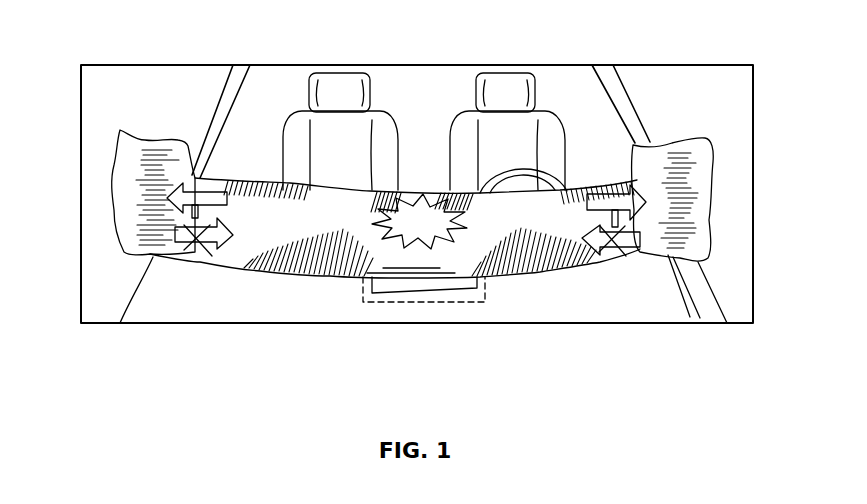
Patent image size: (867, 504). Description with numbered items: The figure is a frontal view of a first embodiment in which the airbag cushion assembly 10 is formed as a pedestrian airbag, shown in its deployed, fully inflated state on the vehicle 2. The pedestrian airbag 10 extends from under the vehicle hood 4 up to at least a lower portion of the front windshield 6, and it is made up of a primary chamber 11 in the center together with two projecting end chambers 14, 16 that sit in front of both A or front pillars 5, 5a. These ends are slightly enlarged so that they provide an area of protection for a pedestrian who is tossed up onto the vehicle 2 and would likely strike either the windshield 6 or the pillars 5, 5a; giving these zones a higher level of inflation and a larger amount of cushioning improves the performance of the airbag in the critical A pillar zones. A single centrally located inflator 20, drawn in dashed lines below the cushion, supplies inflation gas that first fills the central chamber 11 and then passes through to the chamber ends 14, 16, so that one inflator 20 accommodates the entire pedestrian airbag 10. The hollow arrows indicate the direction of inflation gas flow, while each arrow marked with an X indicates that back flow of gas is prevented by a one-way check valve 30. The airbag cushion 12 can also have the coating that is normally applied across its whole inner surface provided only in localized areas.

The vehicle 2 is at (427, 100).
The vehicle hood 4 is at (655, 292).
The A pillar 5 is at (212, 120).
The A pillar 5a is at (625, 108).
The front windshield 6 is at (293, 147).
The airbag cushion assembly 10 is at (518, 208).
The primary chamber 11 is at (290, 258).
The airbag cushion 12 is at (359, 205).
The projecting end chamber 14 is at (128, 177).
The projecting end chamber 16 is at (698, 185).
The inflator 20 is at (385, 300).
The one-way check valve 30 is at (197, 240).